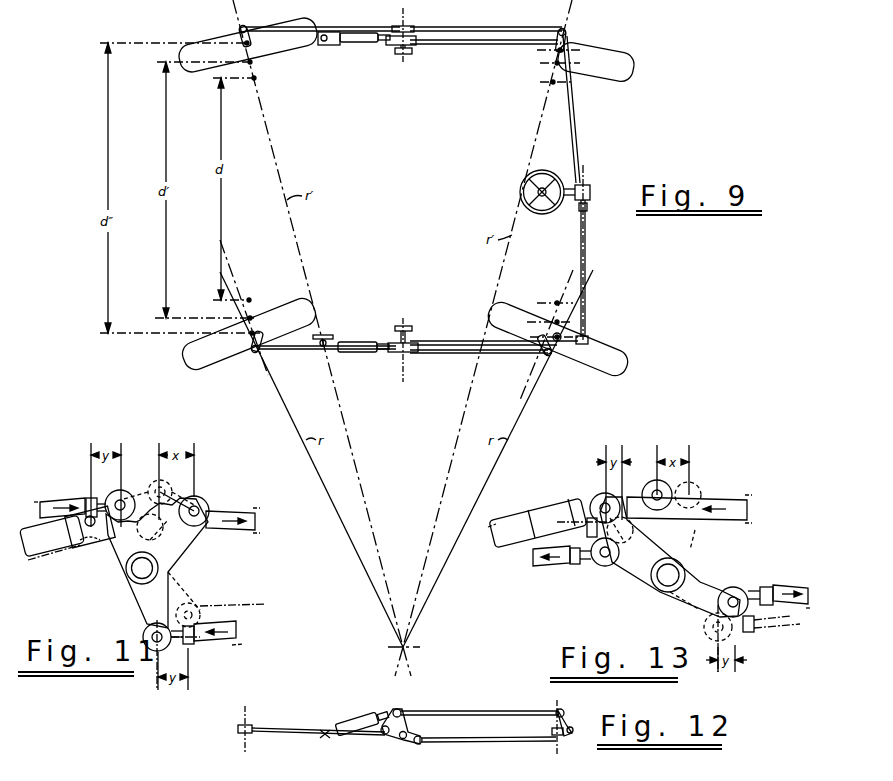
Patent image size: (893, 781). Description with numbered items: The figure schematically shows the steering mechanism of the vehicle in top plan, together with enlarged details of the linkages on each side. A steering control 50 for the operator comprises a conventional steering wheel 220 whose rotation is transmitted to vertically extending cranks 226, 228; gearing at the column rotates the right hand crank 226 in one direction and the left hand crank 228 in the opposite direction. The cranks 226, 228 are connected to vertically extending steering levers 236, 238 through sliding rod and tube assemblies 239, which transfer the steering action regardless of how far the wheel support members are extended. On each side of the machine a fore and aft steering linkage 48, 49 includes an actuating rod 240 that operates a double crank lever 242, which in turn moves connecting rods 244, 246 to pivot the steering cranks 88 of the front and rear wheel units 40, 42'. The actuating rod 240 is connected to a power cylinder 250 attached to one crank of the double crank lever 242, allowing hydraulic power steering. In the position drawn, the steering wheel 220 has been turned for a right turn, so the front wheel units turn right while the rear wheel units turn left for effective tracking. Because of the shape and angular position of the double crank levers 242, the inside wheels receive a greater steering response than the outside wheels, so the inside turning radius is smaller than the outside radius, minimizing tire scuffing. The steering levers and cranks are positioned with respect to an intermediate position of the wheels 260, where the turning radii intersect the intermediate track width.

In FIG. 9, the wheel unit 40 is at (536, 9).
In FIG. 9, the wheel unit 42' is at (242, 40).
In FIG. 9, the steering linkage 48 is at (428, 326).
In FIG. 11, the steering linkage 48 is at (210, 569).
In FIG. 12, the steering linkage 48 is at (388, 772).
In FIG. 9, the steering linkage 49 is at (430, 18).
In FIG. 13, the steering linkage 49 is at (778, 544).
In FIG. 12, the steering linkage 49 is at (386, 703).
In FIG. 9, the steering control 50 is at (606, 192).
In FIG. 9, the steering crank 88 is at (241, 28).
In FIG. 12, the steering crank 88 is at (566, 740).
In FIG. 9, the steering wheel 220 is at (544, 214).
In FIG. 9, the crank 226 is at (584, 210).
In FIG. 9, the crank 228 is at (585, 182).
In FIG. 9, the steering lever 236 is at (590, 343).
In FIG. 9, the steering lever 238 is at (596, 59).
In FIG. 12, the steering lever 238 is at (572, 716).
In FIG. 9, the sliding rod and tube assembly 239 is at (578, 134).
In FIG. 9, the actuating rod 240 is at (471, 43).
In FIG. 11, the actuating rod 240 is at (229, 510).
In FIG. 13, the actuating rod 240 is at (720, 497).
In FIG. 12, the actuating rod 240 is at (485, 711).
In FIG. 11, the double crank lever 242 is at (140, 604).
In FIG. 13, the double crank lever 242 is at (644, 584).
In FIG. 12, the double crank lever 242 is at (408, 743).
In FIG. 9, the connecting rod 244 is at (467, 29).
In FIG. 11, the connecting rod 244 is at (215, 652).
In FIG. 13, the connecting rod 244 is at (794, 585).
In FIG. 12, the connecting rod 244 is at (484, 744).
In FIG. 9, the connecting rod 246 is at (346, 26).
In FIG. 11, the connecting rod 246 is at (49, 496).
In FIG. 13, the connecting rod 246 is at (562, 567).
In FIG. 12, the connecting rod 246 is at (300, 729).
In FIG. 9, the power cylinder 250 is at (354, 44).
In FIG. 11, the power cylinder 250 is at (51, 553).
In FIG. 13, the power cylinder 250 is at (546, 505).
In FIG. 12, the power cylinder 250 is at (352, 717).
In FIG. 9, the intermediate position of the wheels 260 is at (255, 63).